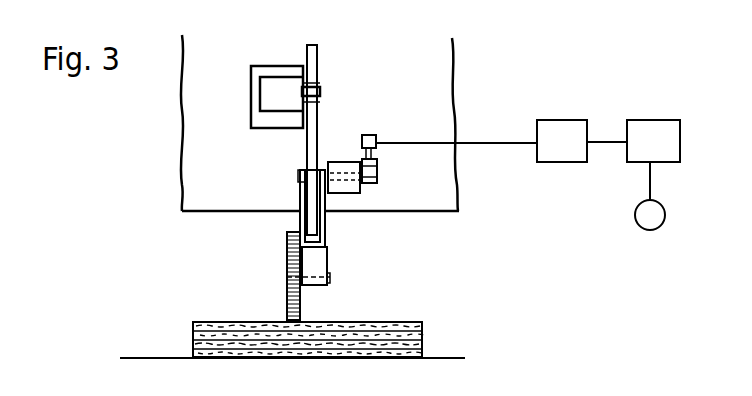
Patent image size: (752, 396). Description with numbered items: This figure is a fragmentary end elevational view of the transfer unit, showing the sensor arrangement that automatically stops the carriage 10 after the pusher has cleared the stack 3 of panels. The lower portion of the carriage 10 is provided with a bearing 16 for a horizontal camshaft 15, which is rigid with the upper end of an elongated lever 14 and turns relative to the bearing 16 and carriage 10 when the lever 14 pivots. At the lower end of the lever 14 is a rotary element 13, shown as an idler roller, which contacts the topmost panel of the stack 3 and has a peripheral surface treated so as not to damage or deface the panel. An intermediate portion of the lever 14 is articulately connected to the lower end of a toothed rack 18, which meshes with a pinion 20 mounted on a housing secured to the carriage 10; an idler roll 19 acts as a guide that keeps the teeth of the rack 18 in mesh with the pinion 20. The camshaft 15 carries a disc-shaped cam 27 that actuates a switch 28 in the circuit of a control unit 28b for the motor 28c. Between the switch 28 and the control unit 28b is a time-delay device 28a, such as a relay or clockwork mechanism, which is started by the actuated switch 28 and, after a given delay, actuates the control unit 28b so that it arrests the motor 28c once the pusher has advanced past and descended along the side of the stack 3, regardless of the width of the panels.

The stack 3 is at (429, 330).
The carriage 10 is at (448, 190).
The rotary element 13 is at (287, 300).
The lever 14 is at (318, 258).
The camshaft 15 is at (300, 178).
The bearing 16 is at (351, 188).
The toothed rack 18 is at (316, 116).
The idler roll 19 is at (320, 88).
The pinion 20 is at (321, 62).
The cam 27 is at (378, 172).
The switch 28 is at (376, 137).
The time-delay device 28a is at (560, 156).
The control unit 28b is at (648, 133).
The motor 28c is at (636, 226).